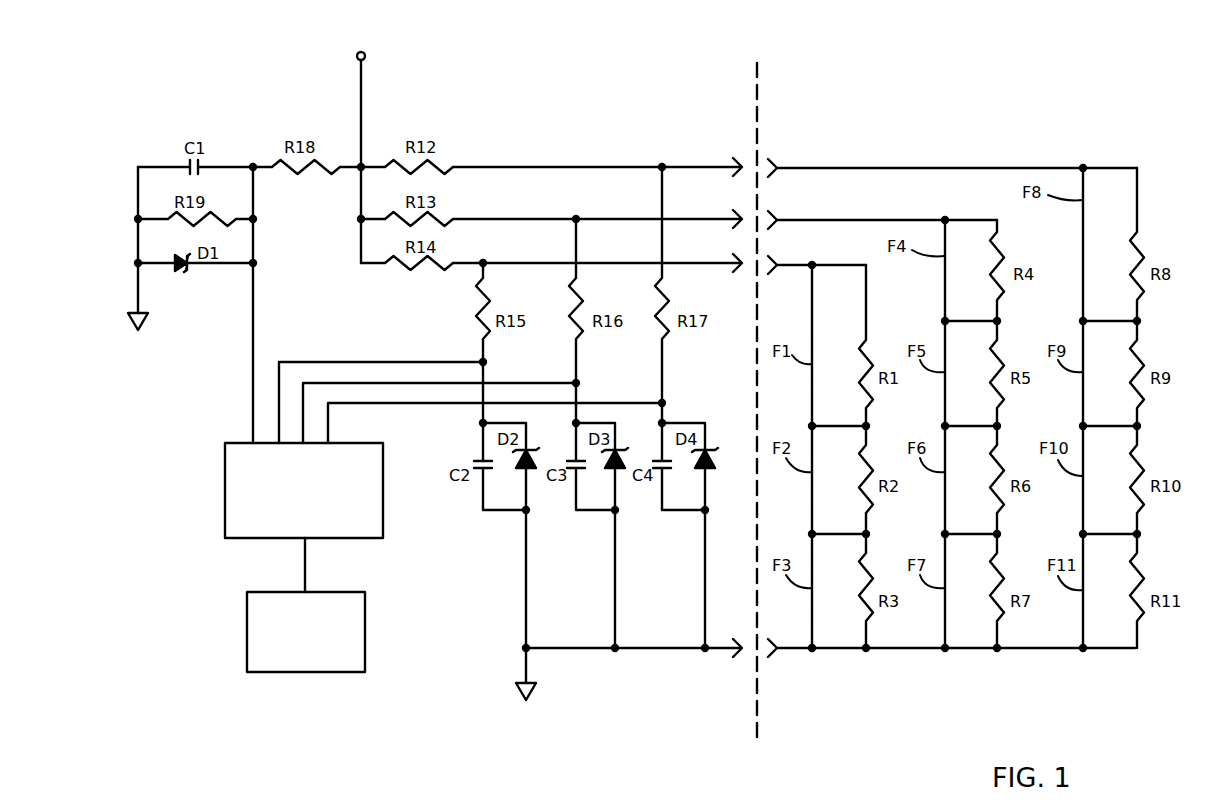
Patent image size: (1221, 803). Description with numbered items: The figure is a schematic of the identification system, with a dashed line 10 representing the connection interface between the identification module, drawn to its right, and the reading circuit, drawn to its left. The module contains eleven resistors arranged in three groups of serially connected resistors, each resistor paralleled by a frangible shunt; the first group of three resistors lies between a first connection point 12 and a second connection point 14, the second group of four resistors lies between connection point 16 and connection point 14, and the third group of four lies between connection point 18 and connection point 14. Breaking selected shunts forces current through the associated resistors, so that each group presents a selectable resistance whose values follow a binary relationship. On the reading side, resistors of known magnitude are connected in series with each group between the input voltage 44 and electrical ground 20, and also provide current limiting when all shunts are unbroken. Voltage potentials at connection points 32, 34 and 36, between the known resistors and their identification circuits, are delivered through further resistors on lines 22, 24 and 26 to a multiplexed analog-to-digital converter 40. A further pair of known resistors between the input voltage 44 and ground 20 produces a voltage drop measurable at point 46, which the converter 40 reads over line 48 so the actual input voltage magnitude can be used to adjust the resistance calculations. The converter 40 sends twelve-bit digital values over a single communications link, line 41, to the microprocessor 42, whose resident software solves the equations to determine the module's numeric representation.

The dashed line 10 is at (757, 90).
The first connection point 12 is at (856, 264).
The second connection point 14 is at (785, 650).
The connection point 16 is at (865, 219).
The connection point 18 is at (870, 168).
The electrical ground 20 is at (137, 297).
The line 22 is at (290, 360).
The line 24 is at (333, 382).
The line 26 is at (380, 404).
The connection point 32 is at (483, 262).
The connection point 34 is at (576, 218).
The connection point 36 is at (662, 165).
The analog-to-digital converter 40 is at (225, 492).
The line 41 is at (305, 562).
The microprocessor 42 is at (247, 636).
The input voltage 44 is at (364, 60).
The point 46 is at (253, 167).
The line 48 is at (255, 298).